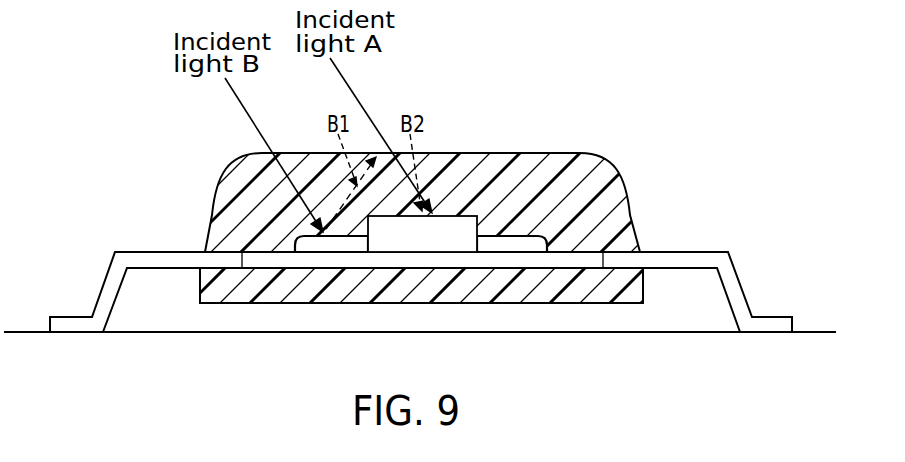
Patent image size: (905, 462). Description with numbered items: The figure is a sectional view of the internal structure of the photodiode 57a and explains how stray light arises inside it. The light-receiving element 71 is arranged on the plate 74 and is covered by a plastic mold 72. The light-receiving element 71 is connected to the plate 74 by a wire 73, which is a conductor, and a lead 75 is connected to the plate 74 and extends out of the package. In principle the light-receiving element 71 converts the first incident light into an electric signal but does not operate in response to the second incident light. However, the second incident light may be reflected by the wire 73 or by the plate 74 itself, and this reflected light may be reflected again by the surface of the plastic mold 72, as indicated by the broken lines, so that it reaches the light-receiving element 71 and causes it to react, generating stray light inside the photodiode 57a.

The photodiode 57a is at (442, 113).
The light-receiving element 71 is at (450, 222).
The plastic mold 72 is at (606, 180).
The wire 73 is at (293, 232).
The plate 74 is at (555, 270).
The lead 75 is at (112, 262).